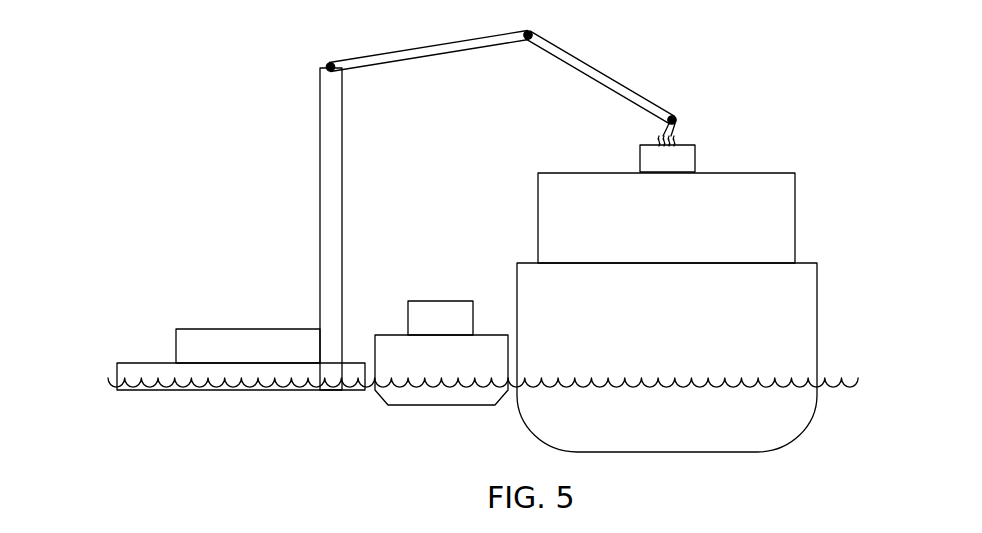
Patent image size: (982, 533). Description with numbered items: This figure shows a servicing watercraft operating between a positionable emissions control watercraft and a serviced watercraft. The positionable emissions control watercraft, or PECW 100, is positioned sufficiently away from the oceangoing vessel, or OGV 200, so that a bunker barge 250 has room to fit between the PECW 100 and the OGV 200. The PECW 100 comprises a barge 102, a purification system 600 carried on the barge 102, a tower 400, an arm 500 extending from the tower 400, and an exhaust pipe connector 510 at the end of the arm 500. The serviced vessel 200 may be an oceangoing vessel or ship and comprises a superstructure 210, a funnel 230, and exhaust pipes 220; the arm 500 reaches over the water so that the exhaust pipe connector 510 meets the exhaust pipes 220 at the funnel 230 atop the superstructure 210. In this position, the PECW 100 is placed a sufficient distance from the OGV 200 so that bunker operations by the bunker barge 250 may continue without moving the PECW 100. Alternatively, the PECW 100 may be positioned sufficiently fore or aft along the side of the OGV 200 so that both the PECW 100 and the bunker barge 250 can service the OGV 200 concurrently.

The PECW 100 is at (348, 211).
The barge 102 is at (147, 368).
The OGV 200 is at (731, 245).
The superstructure 210 is at (730, 217).
The exhaust pipes 220 is at (676, 140).
The funnel 230 is at (695, 158).
The bunker barge 250 is at (418, 348).
The tower 400 is at (320, 215).
The arm 500 is at (470, 53).
The exhaust pipe connector 510 is at (676, 128).
The purification system 600 is at (233, 343).